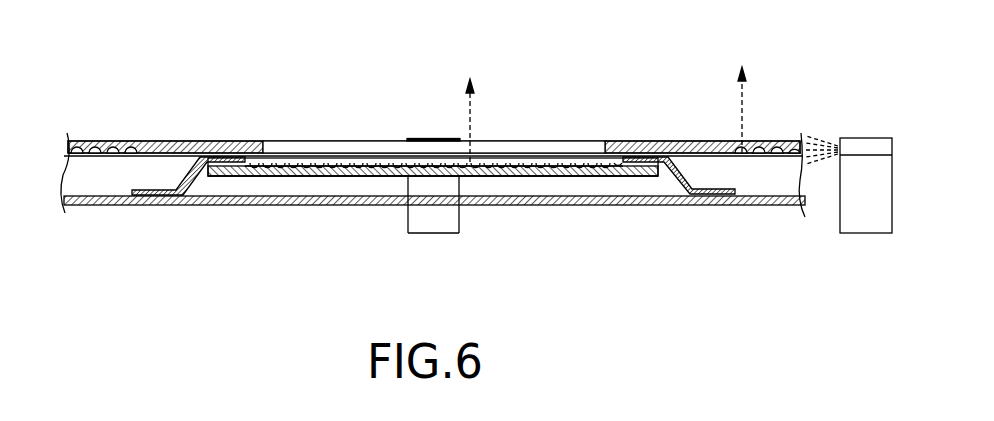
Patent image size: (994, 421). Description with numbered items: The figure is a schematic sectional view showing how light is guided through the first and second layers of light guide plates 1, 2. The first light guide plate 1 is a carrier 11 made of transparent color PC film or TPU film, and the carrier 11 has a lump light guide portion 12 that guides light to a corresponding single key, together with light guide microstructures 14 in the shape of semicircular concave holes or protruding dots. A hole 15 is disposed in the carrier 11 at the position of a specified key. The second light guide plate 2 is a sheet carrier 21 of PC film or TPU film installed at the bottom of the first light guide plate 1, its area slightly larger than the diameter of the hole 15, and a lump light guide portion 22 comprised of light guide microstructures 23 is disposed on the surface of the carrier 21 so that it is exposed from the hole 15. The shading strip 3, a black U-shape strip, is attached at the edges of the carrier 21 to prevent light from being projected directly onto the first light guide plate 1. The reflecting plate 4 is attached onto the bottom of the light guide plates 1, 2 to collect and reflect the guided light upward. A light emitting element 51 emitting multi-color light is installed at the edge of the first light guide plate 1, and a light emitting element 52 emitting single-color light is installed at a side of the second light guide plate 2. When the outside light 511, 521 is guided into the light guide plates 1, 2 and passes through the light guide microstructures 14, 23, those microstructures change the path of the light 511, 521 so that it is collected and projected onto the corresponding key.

The first light guide plate 1 is at (687, 136).
The carrier 11 is at (660, 140).
The lump light guide portion 12 is at (765, 142).
The light guide microstructure 14 is at (781, 157).
The hole 15 is at (362, 140).
The second light guide plate 2 is at (520, 148).
The sheet carrier 21 is at (535, 177).
The lump light guide portion 22 is at (567, 180).
The light guide microstructure 23 is at (578, 156).
The shading strip 3 is at (672, 188).
The reflecting plate 4 is at (638, 205).
The light emitting element emitting multi-color light 51 is at (863, 205).
The outside light 511 is at (743, 108).
The light emitting element emitting single-color light 52 is at (435, 212).
The outside light 521 is at (470, 117).